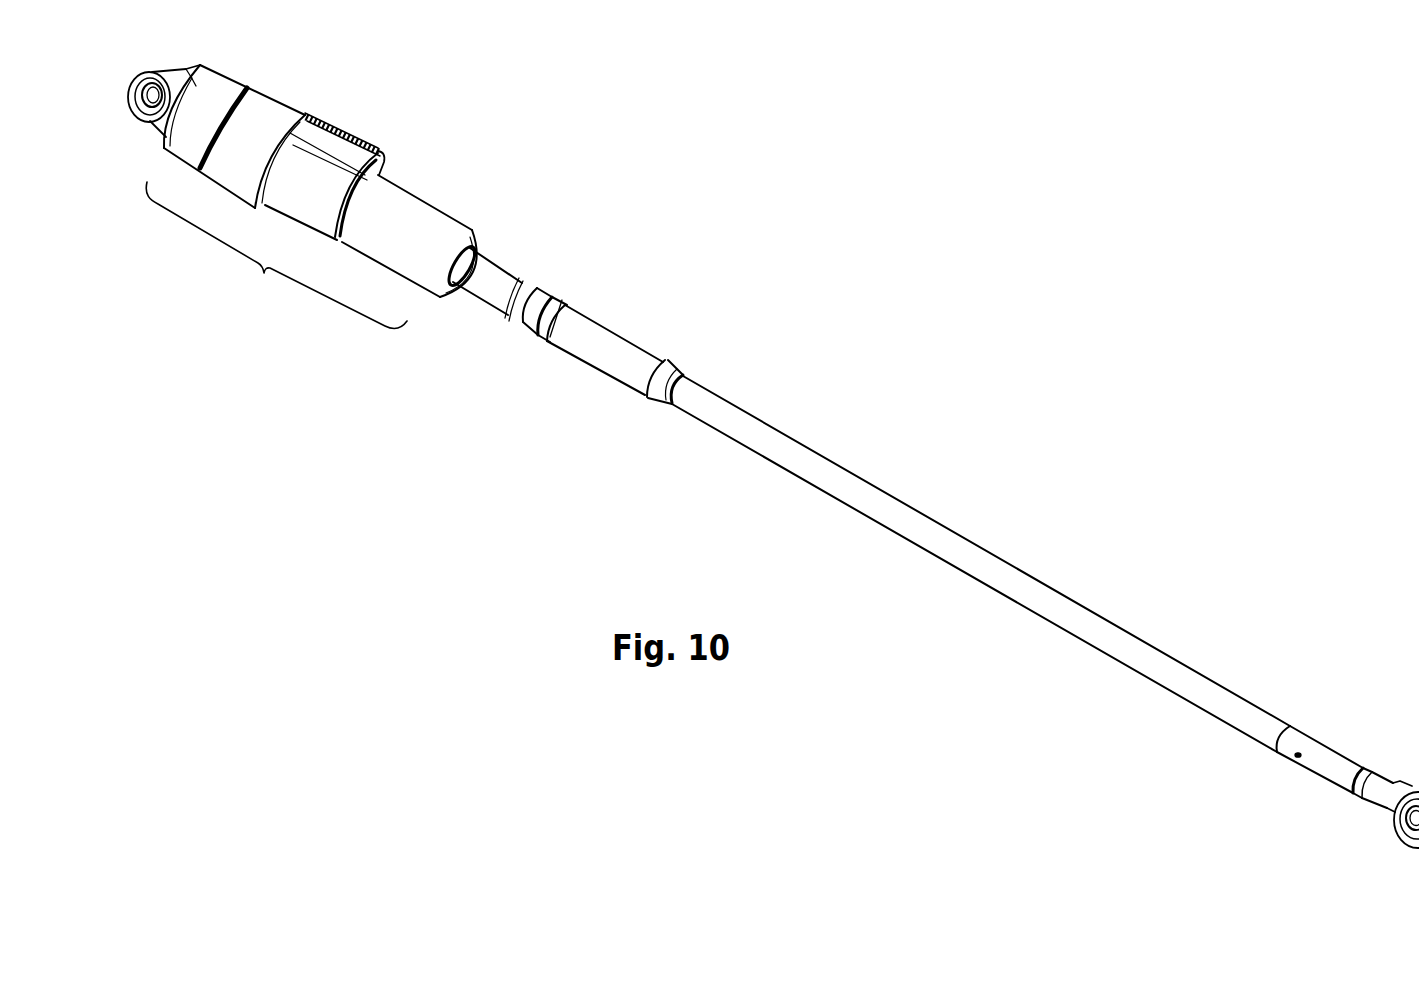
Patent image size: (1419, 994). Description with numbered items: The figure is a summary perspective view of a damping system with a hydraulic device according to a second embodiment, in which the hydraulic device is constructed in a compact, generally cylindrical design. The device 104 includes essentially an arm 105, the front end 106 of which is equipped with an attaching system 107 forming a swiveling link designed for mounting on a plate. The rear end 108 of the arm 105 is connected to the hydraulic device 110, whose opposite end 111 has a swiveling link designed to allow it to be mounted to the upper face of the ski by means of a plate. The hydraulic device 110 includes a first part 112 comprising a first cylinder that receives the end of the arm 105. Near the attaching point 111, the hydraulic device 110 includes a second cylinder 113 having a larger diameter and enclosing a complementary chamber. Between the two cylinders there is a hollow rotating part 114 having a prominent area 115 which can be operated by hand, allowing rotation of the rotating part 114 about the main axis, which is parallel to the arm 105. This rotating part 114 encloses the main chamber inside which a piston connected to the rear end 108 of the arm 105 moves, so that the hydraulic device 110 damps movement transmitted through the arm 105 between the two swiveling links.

The device 104 is at (385, 396).
The arm 105 is at (1060, 610).
The front end 106 is at (1345, 748).
The attaching system 107 is at (1405, 846).
The rear end 108 is at (590, 339).
The hydraulic device 110 is at (304, 177).
The opposite end 111 is at (157, 80).
The first part 112 is at (420, 231).
The second cylinder 113 is at (262, 117).
The hollow rotating part 114 is at (326, 139).
The prominent area 115 is at (363, 160).